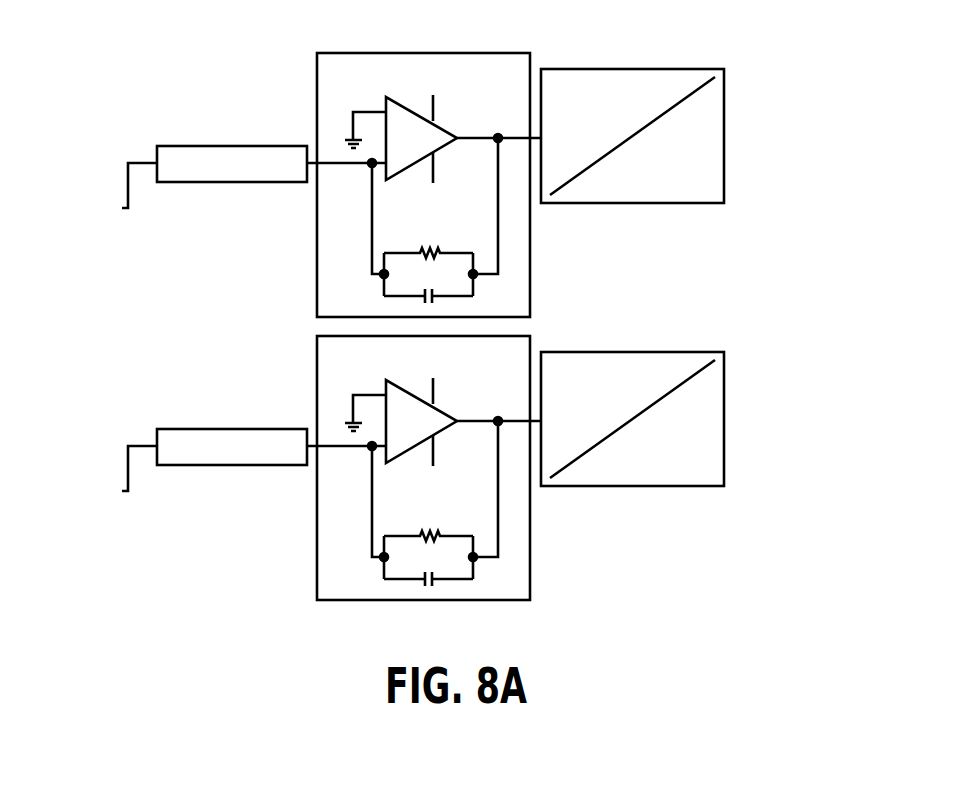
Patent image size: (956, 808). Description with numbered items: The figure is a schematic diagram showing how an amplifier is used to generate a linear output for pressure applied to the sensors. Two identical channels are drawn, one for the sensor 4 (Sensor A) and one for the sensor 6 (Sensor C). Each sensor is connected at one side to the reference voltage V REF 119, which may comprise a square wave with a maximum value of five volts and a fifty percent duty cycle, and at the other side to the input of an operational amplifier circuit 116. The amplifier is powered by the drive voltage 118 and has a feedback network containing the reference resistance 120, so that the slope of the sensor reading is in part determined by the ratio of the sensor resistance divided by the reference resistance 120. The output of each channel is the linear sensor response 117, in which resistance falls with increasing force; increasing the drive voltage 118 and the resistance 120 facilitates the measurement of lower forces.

The sensor 4 is at (183, 146).
The sensor 6 is at (214, 441).
The operational amplifier circuit 116 is at (497, 68).
The sensor response 117 is at (712, 167).
The drive voltage 118 is at (400, 73).
The reference voltage V REF 119 is at (131, 258).
The reference resistance 120 is at (438, 251).